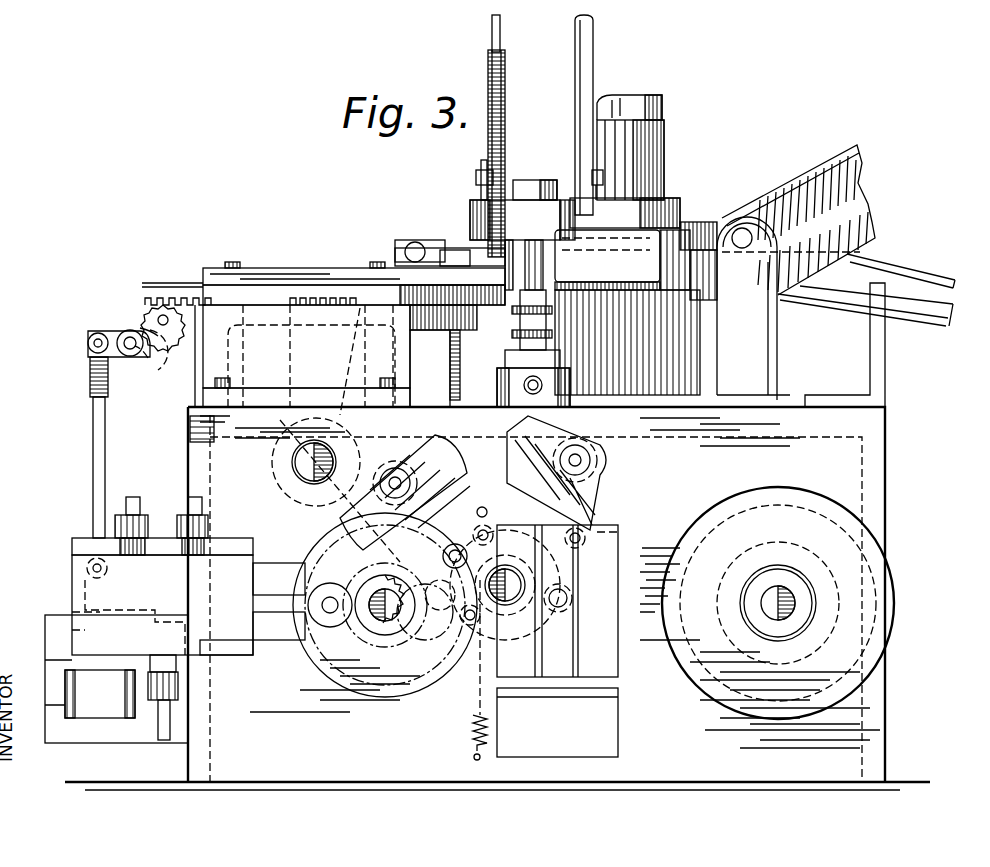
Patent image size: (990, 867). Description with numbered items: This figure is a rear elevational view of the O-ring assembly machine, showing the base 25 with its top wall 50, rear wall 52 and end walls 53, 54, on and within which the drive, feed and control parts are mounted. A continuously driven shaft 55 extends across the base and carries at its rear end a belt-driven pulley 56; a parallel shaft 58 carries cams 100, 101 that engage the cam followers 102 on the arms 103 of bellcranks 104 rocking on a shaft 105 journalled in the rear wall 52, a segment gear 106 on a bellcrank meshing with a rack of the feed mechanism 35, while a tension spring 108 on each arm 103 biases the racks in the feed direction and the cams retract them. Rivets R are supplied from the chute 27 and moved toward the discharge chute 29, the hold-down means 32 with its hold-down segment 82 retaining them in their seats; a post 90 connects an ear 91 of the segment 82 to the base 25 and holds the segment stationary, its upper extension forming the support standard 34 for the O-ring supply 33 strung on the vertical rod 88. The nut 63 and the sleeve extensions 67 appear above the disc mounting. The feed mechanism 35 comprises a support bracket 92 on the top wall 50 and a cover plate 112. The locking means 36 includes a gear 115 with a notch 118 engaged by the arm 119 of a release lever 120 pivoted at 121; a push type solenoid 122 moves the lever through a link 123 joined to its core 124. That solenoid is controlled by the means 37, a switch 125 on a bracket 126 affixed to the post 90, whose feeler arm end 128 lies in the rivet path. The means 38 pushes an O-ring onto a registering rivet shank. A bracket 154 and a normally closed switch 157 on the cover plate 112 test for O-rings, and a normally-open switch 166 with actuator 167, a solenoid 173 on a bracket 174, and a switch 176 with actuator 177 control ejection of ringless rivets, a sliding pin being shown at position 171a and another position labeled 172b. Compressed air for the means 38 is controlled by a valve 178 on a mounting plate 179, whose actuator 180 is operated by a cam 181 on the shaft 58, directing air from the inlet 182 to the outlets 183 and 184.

The base 25 is at (895, 519).
The chute 27 is at (836, 182).
The discharge chute 29 is at (842, 302).
The hold-down means 32 is at (462, 216).
The supply of O-rings 33 is at (505, 136).
The support standard 34 is at (594, 55).
The feed mechanism 35 is at (302, 258).
The locking means 36 is at (126, 310).
The operating means 37 is at (690, 215).
The O-ring pushing means 38 is at (510, 348).
The top wall 50 is at (270, 407).
The rear wall 52 is at (852, 745).
The end wall 53 is at (884, 454).
The end wall 54 is at (190, 444).
The shaft 55 is at (775, 620).
The pulley 56 is at (888, 584).
The shaft 58 is at (384, 592).
The nut 63 is at (650, 99).
The position-releasing sleeve extensions 67 is at (653, 149).
The hold-down segment 82 is at (476, 206).
The rod 88 is at (500, 42).
The post 90 is at (580, 375).
The ear 91 is at (564, 202).
The support bracket 92 is at (400, 372).
The cam 100 is at (430, 627).
The cam 101 is at (505, 596).
The cam followers 102 is at (519, 571).
The arms 103 is at (320, 514).
The bellcranks 104 is at (275, 489).
The shaft 105 is at (332, 451).
The segment gear 106 is at (298, 332).
The tension spring 108 is at (470, 744).
The cover plate 112 is at (352, 267).
The gear 115 is at (150, 300).
The notch 118 is at (172, 352).
The arm 119 is at (148, 360).
The release lever 120 is at (88, 343).
The pivot 121 is at (108, 362).
The push type solenoid 122 is at (68, 730).
The link 123 is at (93, 462).
The core 124 is at (105, 594).
The switch 125 is at (628, 270).
The bracket 126 is at (700, 286).
The end 128 is at (548, 242).
The bracket 154 is at (456, 336).
The switch 157 is at (417, 238).
The switch 166 is at (612, 482).
The actuator 167 is at (620, 534).
The pin position 171a is at (581, 611).
The pin 172b is at (568, 532).
The solenoid 173 is at (618, 659).
The bracket 174 is at (603, 694).
The switch 176 is at (448, 442).
The actuator 177 is at (475, 520).
The valve 178 is at (232, 644).
The mounting plate 179 is at (262, 547).
The actuator 180 is at (322, 628).
The cam 181 is at (315, 697).
The inlet 182 is at (165, 740).
The outlet 183 is at (200, 506).
The outlet 184 is at (160, 488).